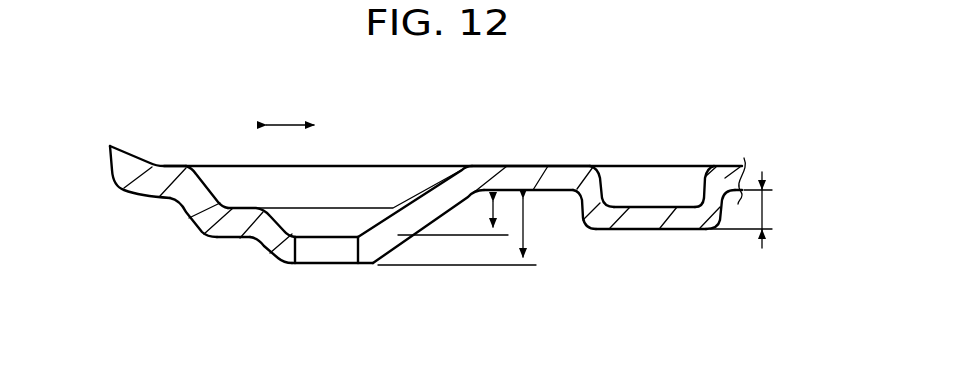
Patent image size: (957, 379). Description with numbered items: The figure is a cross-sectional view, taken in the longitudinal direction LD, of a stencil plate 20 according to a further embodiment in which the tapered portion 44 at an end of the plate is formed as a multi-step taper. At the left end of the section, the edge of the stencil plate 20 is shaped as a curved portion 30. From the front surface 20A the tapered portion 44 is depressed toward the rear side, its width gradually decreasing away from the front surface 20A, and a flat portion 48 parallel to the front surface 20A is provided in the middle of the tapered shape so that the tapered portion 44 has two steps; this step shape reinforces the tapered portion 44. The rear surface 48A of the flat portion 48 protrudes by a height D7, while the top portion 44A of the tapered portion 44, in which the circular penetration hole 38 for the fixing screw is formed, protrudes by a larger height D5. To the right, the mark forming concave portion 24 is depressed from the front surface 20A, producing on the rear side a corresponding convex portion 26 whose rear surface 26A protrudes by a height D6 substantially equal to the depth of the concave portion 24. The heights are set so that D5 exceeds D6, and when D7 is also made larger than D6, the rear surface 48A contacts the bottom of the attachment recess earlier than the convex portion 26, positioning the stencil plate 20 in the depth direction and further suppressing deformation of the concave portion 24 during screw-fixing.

The stencil plate 20 is at (448, 136).
The front surface 20A is at (500, 164).
The concave portion 24 is at (640, 186).
The convex portion 26 is at (677, 231).
The rear surface of convex portion 26A is at (617, 231).
The curved portion 30 is at (135, 158).
The penetration hole 38 is at (340, 256).
The tapered portion 44 is at (190, 226).
The top portion 44A is at (313, 266).
The flat portion 48 is at (212, 238).
The rear surface of flat portion 48A is at (238, 239).
The longitudinal direction LD is at (290, 108).
The protrusion height of tapered portion D5 is at (527, 233).
The protrusion height of convex portion D6 is at (770, 207).
The protrusion height of rear surface of flat portion D7 is at (487, 224).